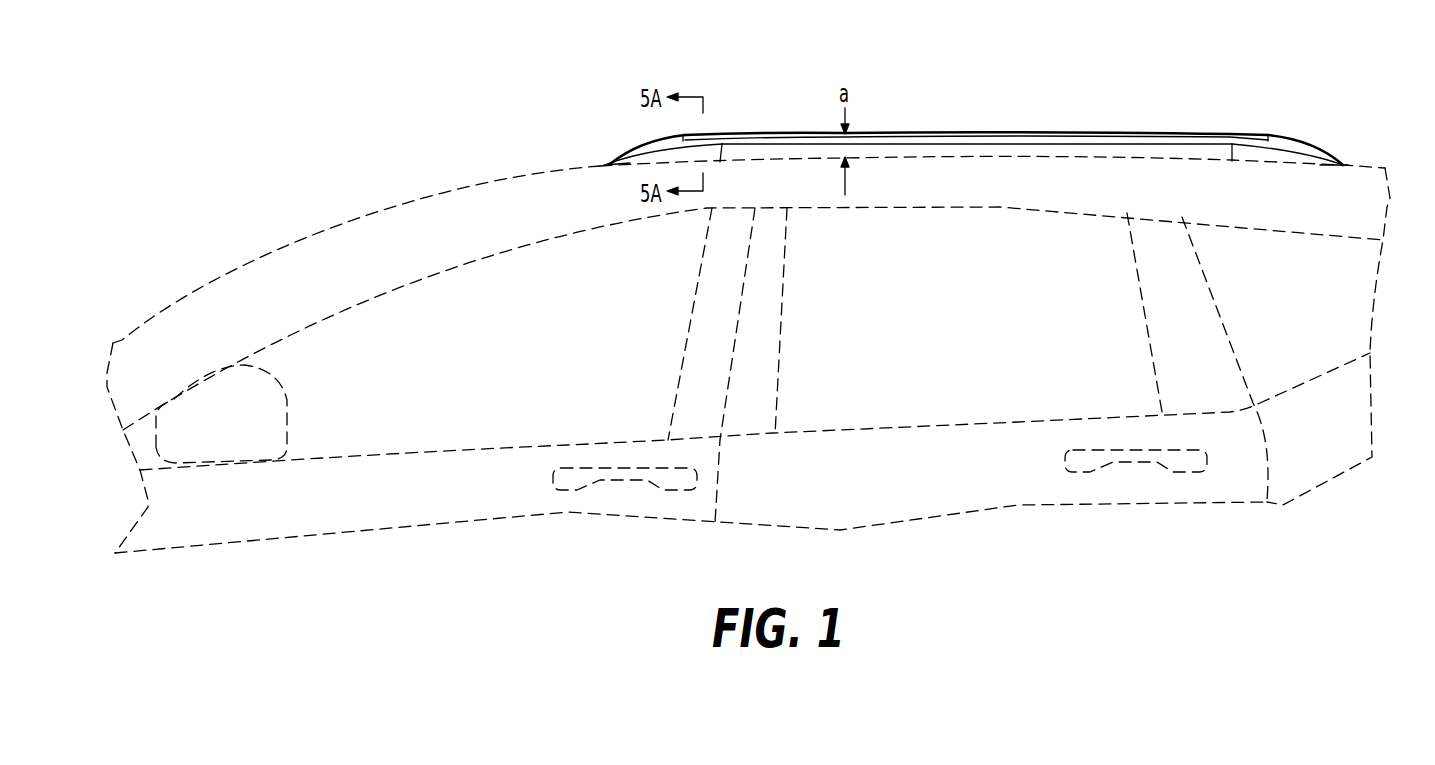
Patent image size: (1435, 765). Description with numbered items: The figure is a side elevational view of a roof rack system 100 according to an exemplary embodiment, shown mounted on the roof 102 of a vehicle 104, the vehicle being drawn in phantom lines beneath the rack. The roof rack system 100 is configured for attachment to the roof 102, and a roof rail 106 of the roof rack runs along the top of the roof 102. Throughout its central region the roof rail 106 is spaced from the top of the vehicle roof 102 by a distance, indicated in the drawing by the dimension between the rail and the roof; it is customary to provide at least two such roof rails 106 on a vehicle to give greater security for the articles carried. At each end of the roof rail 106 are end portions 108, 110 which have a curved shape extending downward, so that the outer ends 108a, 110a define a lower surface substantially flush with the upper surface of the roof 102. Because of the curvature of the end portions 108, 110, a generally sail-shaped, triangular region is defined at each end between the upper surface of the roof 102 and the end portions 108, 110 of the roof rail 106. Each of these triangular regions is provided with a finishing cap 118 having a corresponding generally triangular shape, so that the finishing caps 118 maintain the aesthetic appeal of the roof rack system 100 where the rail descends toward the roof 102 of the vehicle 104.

The roof rack system 100 is at (981, 104).
The roof 102 is at (1118, 160).
The vehicle 104 is at (326, 225).
The roof rail 106 is at (917, 132).
The end portion 108 is at (645, 145).
The outer end 108a is at (608, 163).
The end portion 110 is at (1304, 137).
The outer end 110a is at (1345, 164).
The finishing cap 118 is at (712, 152).